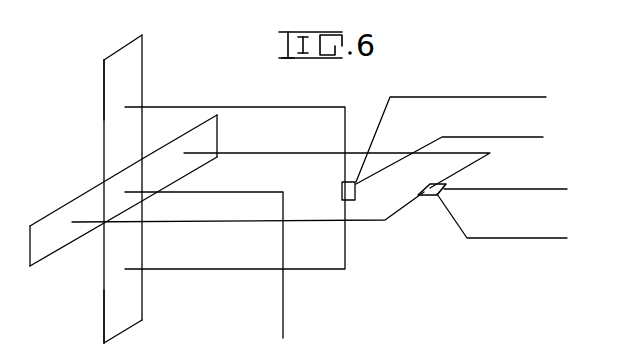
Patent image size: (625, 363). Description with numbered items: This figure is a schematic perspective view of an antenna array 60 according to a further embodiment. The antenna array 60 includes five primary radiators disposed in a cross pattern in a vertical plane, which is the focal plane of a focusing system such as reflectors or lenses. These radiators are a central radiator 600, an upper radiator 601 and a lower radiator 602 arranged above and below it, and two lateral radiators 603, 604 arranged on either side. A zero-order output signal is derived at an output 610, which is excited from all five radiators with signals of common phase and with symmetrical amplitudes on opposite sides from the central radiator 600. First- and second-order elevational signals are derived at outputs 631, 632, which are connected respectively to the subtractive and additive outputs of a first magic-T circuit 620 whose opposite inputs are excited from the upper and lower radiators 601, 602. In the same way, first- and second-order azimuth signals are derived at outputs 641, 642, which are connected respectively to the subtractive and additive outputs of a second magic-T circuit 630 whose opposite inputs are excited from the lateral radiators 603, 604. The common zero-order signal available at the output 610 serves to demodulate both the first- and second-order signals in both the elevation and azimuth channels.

The antenna array 60 is at (92, 140).
The central radiator 600 is at (140, 173).
The upper radiator 601 is at (139, 62).
The lower radiator 602 is at (135, 304).
The lateral radiator 603 is at (53, 216).
The lateral radiator 604 is at (212, 133).
The output 610 is at (284, 318).
The first magic-T circuit 620 is at (342, 189).
The second magic-T circuit 630 is at (431, 196).
The output 631 is at (519, 96).
The output 632 is at (511, 137).
The output 641 is at (509, 188).
The output 642 is at (509, 237).